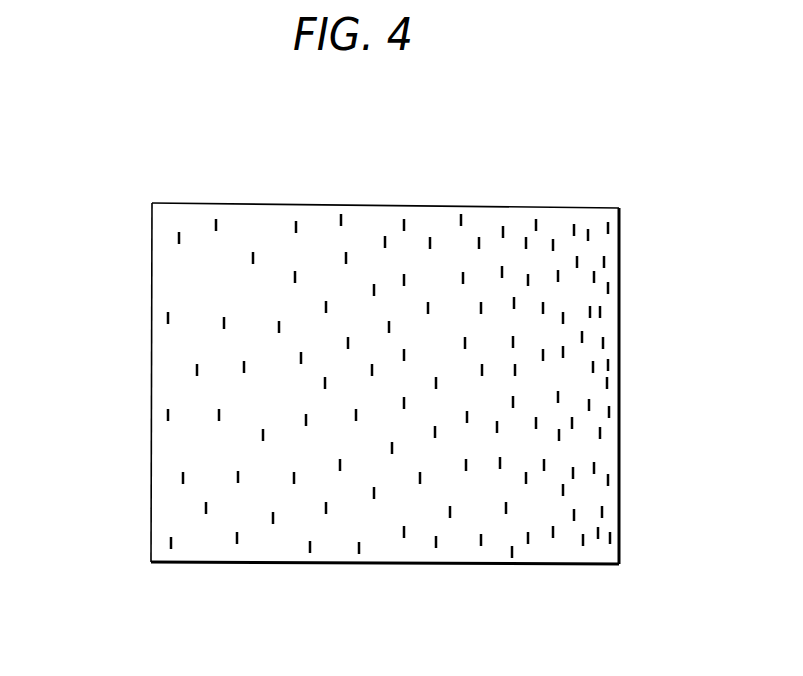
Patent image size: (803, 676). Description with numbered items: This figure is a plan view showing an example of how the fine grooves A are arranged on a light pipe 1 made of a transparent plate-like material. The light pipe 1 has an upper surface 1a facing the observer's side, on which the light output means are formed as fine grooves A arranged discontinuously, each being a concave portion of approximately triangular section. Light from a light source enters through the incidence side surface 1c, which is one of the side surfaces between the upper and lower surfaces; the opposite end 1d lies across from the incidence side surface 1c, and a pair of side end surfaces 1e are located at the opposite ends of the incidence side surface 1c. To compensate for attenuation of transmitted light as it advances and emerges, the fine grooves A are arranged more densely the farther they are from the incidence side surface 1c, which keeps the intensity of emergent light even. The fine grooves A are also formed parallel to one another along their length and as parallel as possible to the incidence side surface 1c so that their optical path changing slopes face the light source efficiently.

The light pipe 1 is at (382, 389).
The upper surface 1a is at (389, 348).
The incidence side surface 1c is at (151, 342).
The opposite end 1d is at (620, 253).
The side end surfaces 1e is at (418, 207).
The fine grooves A is at (298, 227).